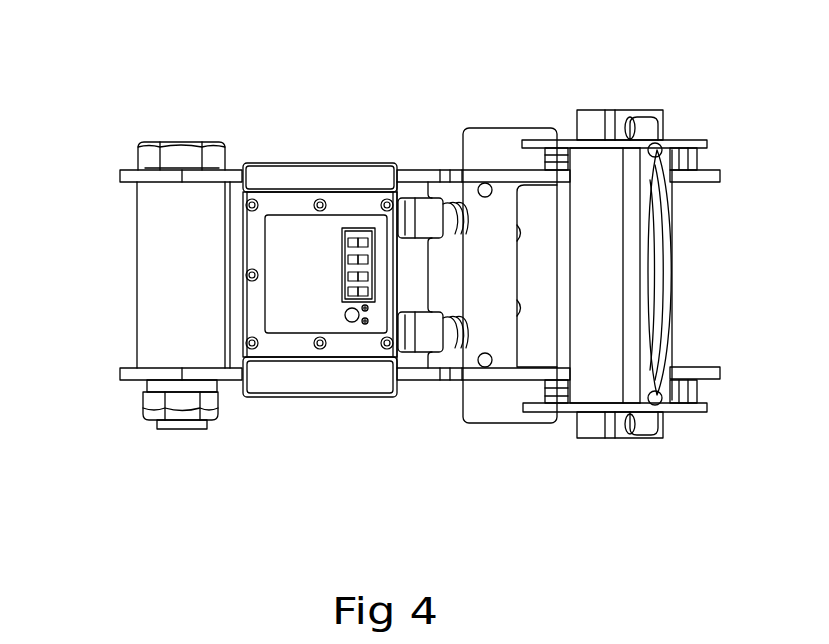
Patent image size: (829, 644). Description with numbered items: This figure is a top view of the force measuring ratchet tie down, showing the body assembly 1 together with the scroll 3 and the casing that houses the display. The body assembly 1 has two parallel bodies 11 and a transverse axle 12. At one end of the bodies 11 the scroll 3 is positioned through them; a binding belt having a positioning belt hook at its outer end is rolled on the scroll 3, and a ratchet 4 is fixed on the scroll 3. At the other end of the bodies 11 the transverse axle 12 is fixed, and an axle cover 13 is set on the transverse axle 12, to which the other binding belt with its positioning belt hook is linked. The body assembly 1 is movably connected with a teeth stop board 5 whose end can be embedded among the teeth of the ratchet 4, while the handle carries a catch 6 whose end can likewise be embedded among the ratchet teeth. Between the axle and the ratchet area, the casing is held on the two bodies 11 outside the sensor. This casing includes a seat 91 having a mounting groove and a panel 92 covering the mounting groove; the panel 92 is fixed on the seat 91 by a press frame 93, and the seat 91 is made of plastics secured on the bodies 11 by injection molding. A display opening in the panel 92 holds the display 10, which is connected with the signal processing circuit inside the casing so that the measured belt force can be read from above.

The body assembly 1 is at (407, 403).
The scroll 3 is at (592, 182).
The ratchet 4 is at (577, 408).
The teeth stop board 5 is at (503, 148).
The catch 6 is at (658, 273).
The display 10 is at (358, 232).
The body 11 is at (233, 374).
The transverse axle 12 is at (180, 160).
The axle cover 13 is at (157, 272).
The seat 91 is at (293, 382).
The panel 92 is at (307, 232).
The press frame 93 is at (358, 348).